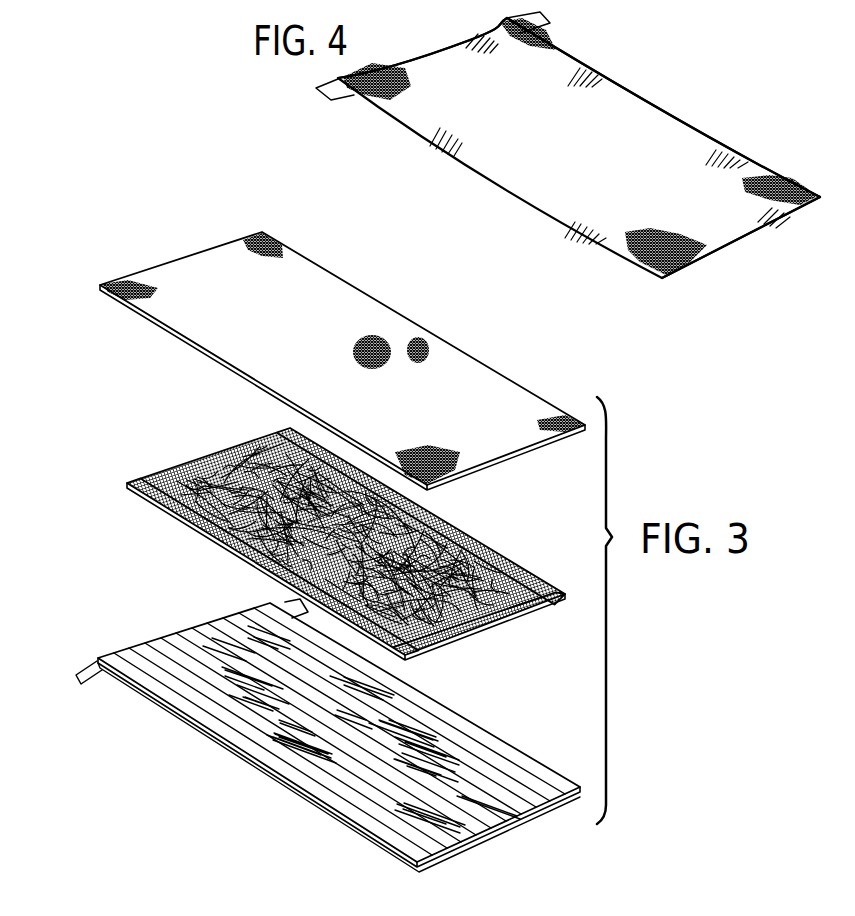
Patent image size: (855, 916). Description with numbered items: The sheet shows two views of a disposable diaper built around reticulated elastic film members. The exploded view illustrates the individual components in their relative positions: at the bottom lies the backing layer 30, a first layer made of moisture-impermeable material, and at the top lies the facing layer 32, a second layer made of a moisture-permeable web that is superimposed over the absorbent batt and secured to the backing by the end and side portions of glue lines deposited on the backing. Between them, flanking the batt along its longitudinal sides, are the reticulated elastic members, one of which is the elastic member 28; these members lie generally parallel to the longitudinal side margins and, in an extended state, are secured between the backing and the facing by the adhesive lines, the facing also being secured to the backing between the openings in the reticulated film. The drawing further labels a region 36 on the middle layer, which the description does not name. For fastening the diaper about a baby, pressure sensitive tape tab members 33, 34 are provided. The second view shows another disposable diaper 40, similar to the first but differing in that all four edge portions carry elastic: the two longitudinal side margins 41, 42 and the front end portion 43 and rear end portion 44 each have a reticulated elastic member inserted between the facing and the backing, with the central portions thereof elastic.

In FIG. 3, the elastic member 28 is at (143, 503).
In FIG. 3, the backing layer 30 is at (250, 722).
In FIG. 3, the facing layer 32 is at (163, 277).
In FIG. 3, the pressure sensitive tape tab member 33 is at (80, 671).
In FIG. 3, the pressure sensitive tape tab member 34 is at (290, 602).
In FIG. 3, the mesh border 36 is at (180, 519).
In FIG. 4, the disposable diaper 40 is at (428, 157).
In FIG. 4, the longitudinal side margin 41 is at (498, 170).
In FIG. 4, the longitudinal side margin 42 is at (627, 88).
In FIG. 4, the front end portion 43 is at (420, 58).
In FIG. 4, the rear end portion 44 is at (737, 237).